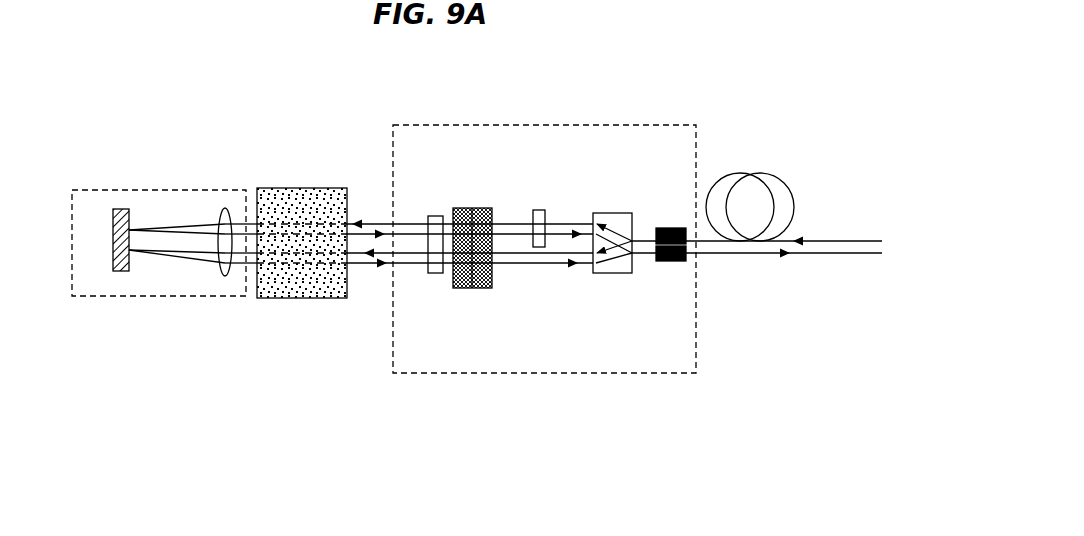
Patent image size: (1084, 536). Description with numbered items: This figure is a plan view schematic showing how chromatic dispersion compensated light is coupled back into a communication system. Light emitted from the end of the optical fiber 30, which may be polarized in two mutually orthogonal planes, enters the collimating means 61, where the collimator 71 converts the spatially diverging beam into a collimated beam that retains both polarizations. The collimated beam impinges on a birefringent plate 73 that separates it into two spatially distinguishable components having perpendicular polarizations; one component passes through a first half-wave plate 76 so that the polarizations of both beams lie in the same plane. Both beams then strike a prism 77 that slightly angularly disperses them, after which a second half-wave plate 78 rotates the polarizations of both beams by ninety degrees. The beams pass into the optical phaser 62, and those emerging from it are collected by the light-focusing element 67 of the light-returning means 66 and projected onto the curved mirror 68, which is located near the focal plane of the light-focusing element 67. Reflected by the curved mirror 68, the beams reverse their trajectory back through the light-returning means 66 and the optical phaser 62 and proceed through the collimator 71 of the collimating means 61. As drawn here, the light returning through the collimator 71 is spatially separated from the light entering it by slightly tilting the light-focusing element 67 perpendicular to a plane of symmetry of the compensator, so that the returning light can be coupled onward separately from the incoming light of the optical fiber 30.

The optical fiber 30 is at (838, 242).
The collimating means 61 is at (696, 314).
The optical phaser 62 is at (303, 188).
The light-returning means 66 is at (192, 297).
The light-focusing element 67 is at (222, 208).
The curved mirror 68 is at (118, 207).
The collimator 71 is at (667, 228).
The birefringent plate 73 is at (613, 218).
The first half-wave plate 76 is at (536, 209).
The prism 77 is at (472, 207).
The second half-wave plate 78 is at (433, 215).